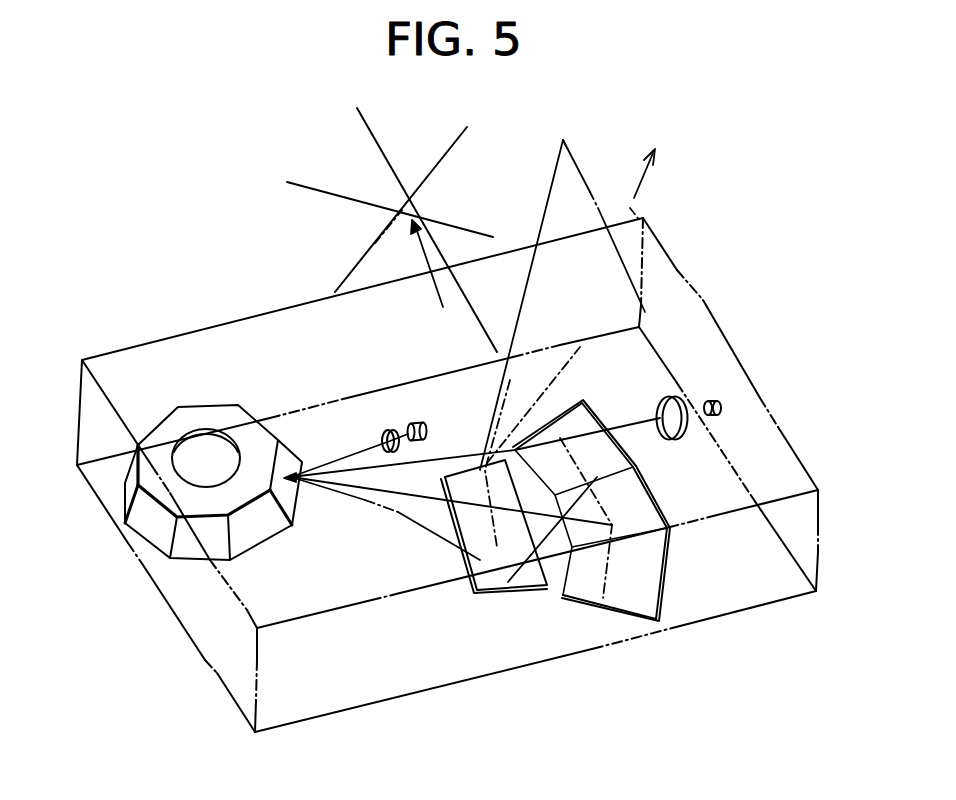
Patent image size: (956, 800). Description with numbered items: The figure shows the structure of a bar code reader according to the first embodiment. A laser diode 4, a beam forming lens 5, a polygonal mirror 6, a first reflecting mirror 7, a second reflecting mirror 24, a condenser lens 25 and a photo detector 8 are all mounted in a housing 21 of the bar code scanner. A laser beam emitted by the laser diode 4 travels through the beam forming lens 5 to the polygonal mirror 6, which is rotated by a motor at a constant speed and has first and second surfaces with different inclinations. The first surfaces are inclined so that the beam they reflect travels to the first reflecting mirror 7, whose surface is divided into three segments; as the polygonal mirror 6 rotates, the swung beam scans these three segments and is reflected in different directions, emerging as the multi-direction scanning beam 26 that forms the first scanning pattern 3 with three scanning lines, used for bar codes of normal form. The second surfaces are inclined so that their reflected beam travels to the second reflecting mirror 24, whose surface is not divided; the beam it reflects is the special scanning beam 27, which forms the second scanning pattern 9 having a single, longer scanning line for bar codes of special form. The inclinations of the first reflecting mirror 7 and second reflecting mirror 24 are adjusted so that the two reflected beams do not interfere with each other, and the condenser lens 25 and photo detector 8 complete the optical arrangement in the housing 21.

The housing 21 is at (147, 347).
The polygonal mirror 6 is at (148, 530).
The beam forming lens 5 is at (386, 432).
The laser diode 4 is at (417, 423).
The first scanning pattern 3 is at (372, 132).
The multi-direction scanning beam 26 is at (433, 253).
The special scanning beam 27 is at (632, 208).
The second scanning pattern 9 is at (598, 206).
The second reflecting mirror 24 is at (478, 558).
The first reflecting mirror 7 is at (666, 580).
The condenser lens 25 is at (675, 398).
The photo detector 8 is at (722, 408).